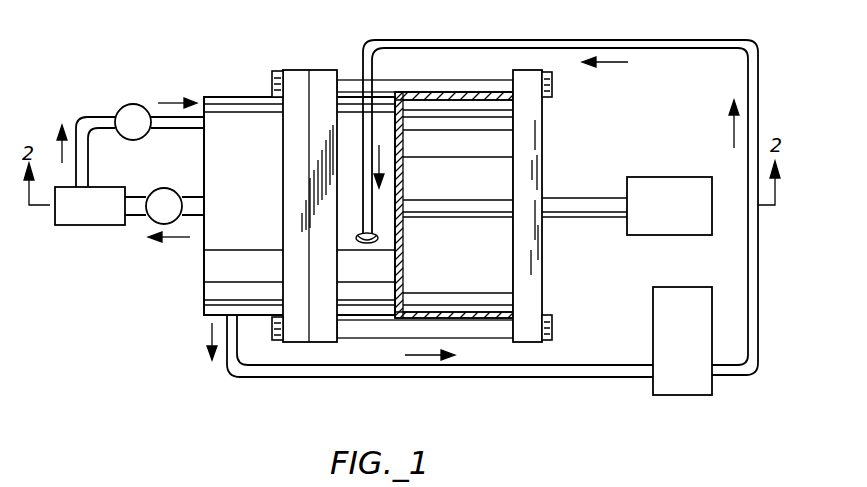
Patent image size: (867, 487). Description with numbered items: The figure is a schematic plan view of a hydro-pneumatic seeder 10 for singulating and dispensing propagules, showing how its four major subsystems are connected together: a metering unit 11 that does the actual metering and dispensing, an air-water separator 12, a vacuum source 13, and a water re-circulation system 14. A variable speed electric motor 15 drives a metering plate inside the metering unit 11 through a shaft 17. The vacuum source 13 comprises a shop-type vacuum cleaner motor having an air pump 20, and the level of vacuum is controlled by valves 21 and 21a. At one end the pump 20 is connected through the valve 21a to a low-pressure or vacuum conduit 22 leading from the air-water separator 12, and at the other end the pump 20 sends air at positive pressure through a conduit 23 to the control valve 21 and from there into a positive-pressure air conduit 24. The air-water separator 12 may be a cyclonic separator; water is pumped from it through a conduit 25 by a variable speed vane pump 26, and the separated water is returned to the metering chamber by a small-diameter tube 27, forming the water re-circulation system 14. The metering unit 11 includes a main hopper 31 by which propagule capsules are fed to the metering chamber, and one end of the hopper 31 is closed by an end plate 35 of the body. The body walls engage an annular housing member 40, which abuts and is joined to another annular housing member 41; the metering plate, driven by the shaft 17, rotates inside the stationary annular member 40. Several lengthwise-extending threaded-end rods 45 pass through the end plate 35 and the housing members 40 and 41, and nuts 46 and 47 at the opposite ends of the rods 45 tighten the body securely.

The hydro-pneumatic seeder 10 is at (272, 48).
The metering unit 11 is at (557, 146).
The air-water separator 12 is at (178, 293).
The vacuum source 13 is at (76, 108).
The water re-circulation system 14 is at (560, 388).
The variable speed electric motor 15 is at (673, 183).
The shaft 17 is at (605, 214).
The air pump 20 is at (88, 227).
The control valve 21 is at (133, 103).
The valve 21a is at (133, 228).
The vacuum conduit 22 is at (196, 193).
The conduit 23 is at (83, 152).
The positive-pressure air conduit 24 is at (190, 130).
The conduit 25 is at (320, 374).
The variable speed vane pump 26 is at (662, 300).
The tube 27 is at (362, 62).
The main hopper 31 is at (456, 272).
The end plate 35 is at (520, 186).
The annular housing member 40 is at (322, 258).
The annular housing member 41 is at (290, 215).
The threaded-end rods 45 is at (458, 82).
The nuts 46 is at (272, 79).
The nuts 47 is at (553, 80).